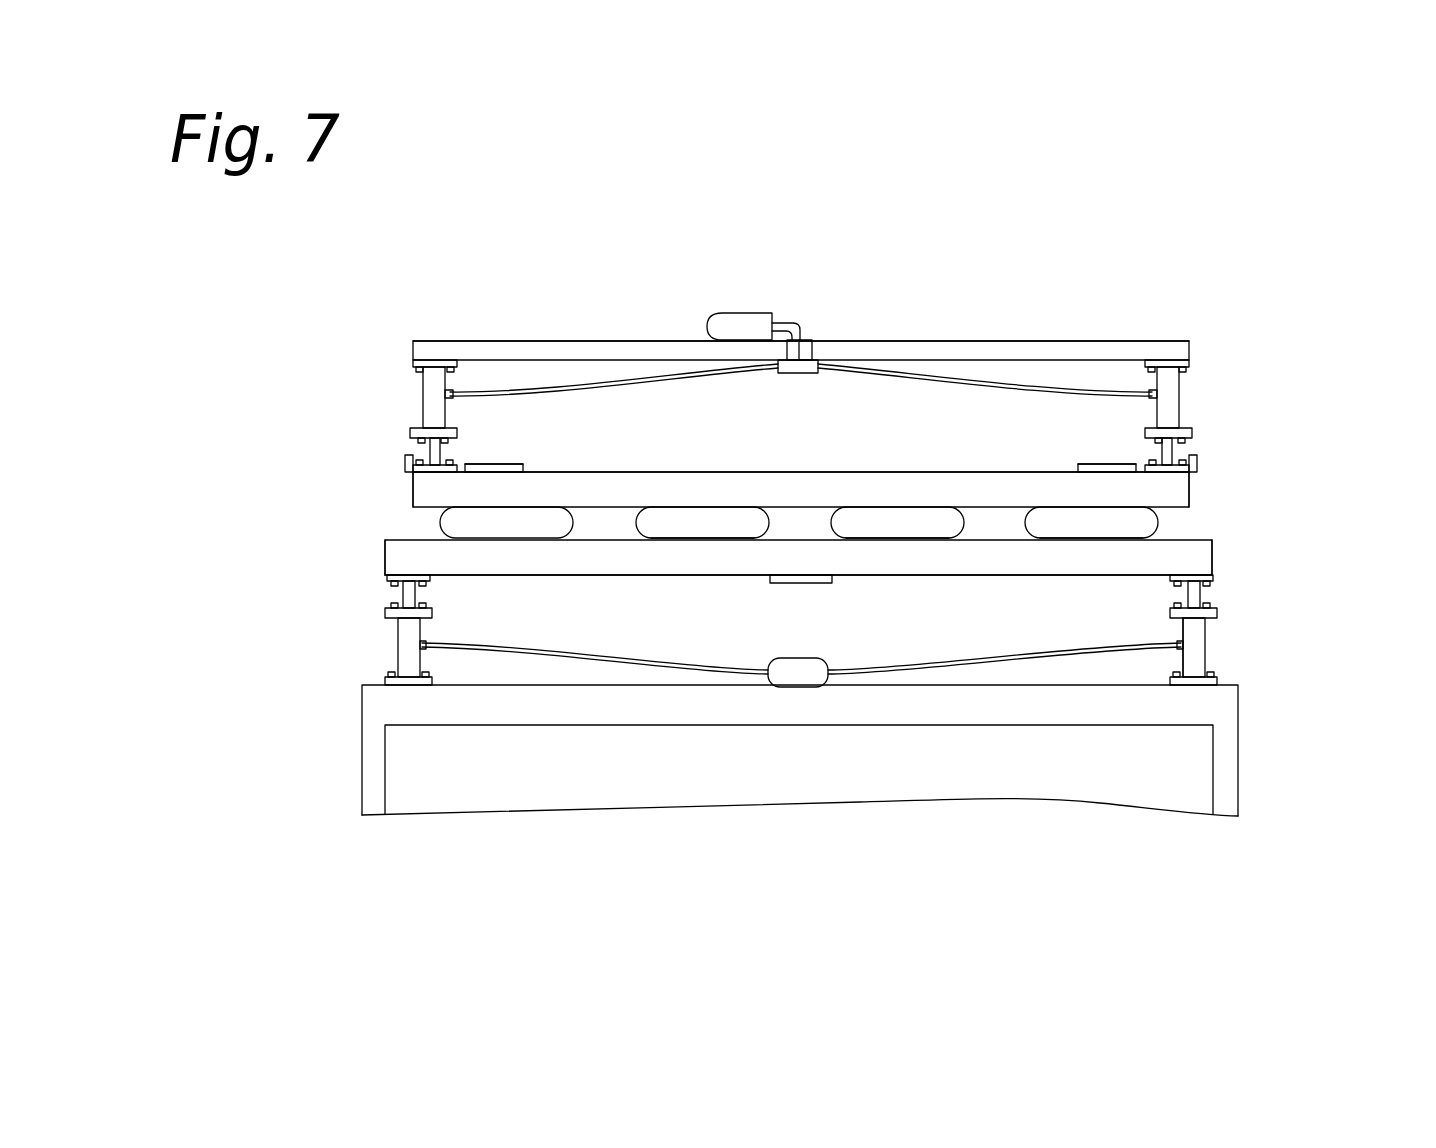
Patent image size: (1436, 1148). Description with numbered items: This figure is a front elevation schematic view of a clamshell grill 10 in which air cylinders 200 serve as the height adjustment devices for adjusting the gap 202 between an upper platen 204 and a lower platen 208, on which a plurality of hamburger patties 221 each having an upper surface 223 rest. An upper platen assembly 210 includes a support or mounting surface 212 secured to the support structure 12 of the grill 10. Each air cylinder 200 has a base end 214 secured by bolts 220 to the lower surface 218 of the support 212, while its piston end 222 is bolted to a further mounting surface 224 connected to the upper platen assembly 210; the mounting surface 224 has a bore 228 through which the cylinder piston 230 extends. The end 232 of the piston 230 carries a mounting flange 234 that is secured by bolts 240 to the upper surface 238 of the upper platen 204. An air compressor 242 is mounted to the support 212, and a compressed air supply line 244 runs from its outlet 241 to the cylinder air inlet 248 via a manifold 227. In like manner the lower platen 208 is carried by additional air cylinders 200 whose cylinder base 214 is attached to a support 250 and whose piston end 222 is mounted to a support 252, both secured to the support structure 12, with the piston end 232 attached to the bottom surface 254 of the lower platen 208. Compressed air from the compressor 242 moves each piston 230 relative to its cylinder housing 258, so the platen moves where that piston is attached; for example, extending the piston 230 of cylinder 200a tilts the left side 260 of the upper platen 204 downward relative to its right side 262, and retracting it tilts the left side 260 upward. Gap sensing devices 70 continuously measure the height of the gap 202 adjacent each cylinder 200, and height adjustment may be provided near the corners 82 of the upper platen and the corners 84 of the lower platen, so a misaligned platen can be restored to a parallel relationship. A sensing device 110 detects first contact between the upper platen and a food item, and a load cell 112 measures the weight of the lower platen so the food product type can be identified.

The grill 10 is at (1137, 220).
The support structure 12 is at (785, 573).
The gap sensing device 70 is at (405, 462).
The corners of upper platen 82 is at (400, 482).
The corners of lower platen 84 is at (1207, 658).
The sensing device 110 is at (527, 464).
The load cell 112 is at (800, 583).
The air cylinder 200 is at (815, 528).
The air cylinder 200a is at (815, 528).
The gap 202 is at (423, 522).
The upper platen 204 is at (1190, 512).
The lower platen 208 is at (385, 548).
The upper platen assembly 210 is at (1060, 326).
The support or mounting surface 212 is at (612, 341).
The base end of air cylinder 214 is at (493, 372).
The lower surface of support 218 is at (465, 367).
The bolts 220 is at (413, 360).
The hamburger patties 221 is at (908, 522).
The piston end of air cylinder 222 is at (423, 413).
The upper surface of hamburger patty 223 is at (733, 507).
The mounting surface 224 is at (423, 426).
The manifold 227 is at (795, 374).
The bore 228 is at (447, 420).
The cylinder piston 230 is at (410, 433).
The end of piston 232 is at (512, 468).
The mounting flange 234 is at (442, 474).
The upper surface of upper platen 238 is at (685, 472).
The bolts 240 is at (1017, 525).
The outlet of air compressor 241 is at (802, 326).
The air compressor 242 is at (740, 318).
The compressed air supply line 244 is at (752, 368).
The cylinder air inlet 248 is at (455, 397).
The support 250 is at (375, 725).
The support 252 is at (398, 650).
The bottom surface of lower platen 254 is at (598, 575).
The cylinder housing 258 is at (398, 682).
The left side of upper platen 260 is at (392, 472).
The right side of upper platen 262 is at (1186, 521).